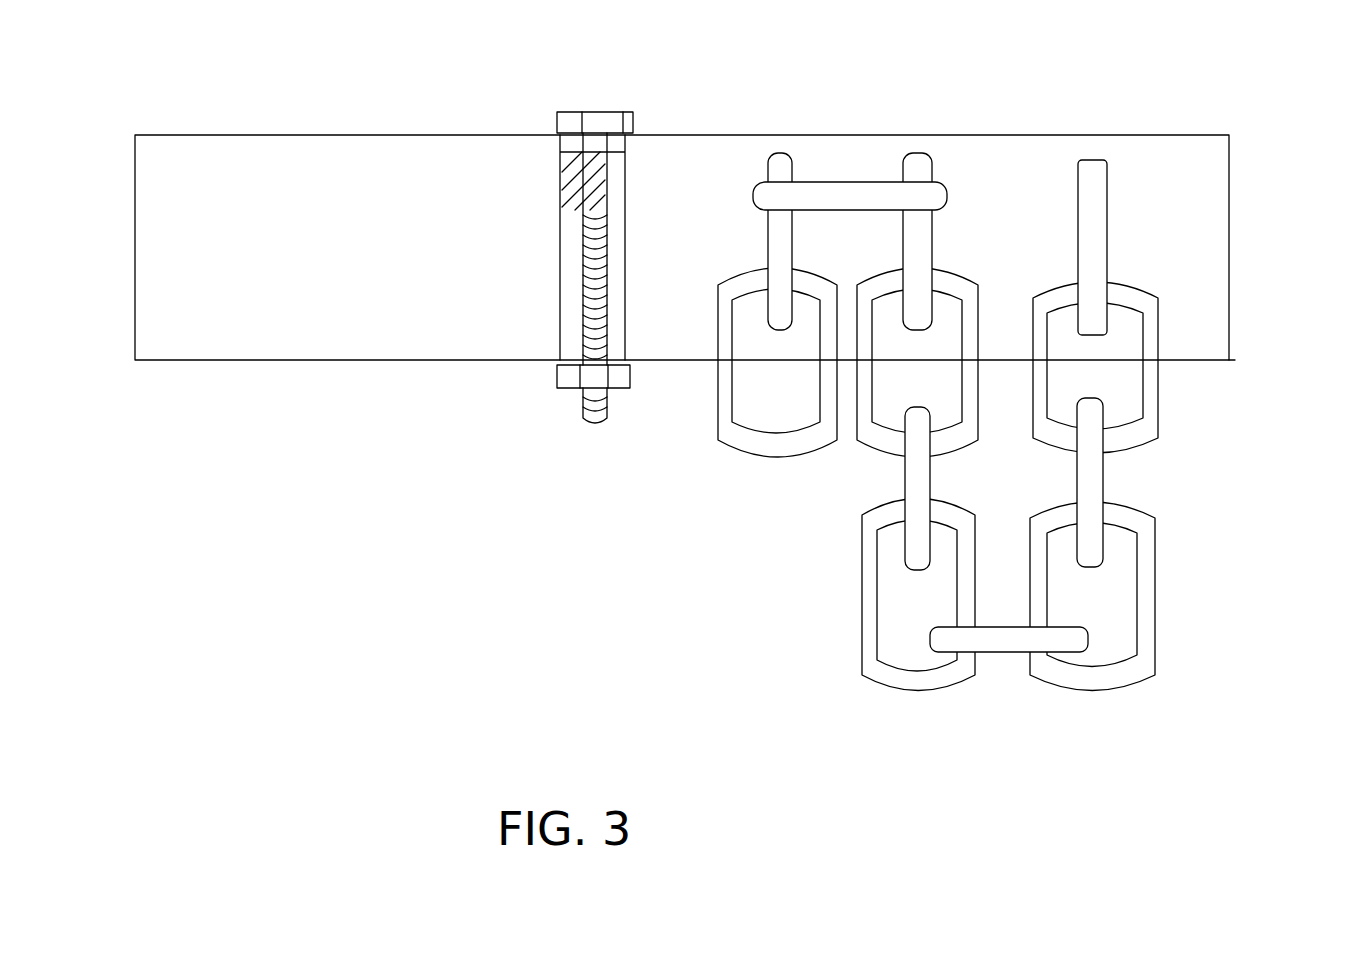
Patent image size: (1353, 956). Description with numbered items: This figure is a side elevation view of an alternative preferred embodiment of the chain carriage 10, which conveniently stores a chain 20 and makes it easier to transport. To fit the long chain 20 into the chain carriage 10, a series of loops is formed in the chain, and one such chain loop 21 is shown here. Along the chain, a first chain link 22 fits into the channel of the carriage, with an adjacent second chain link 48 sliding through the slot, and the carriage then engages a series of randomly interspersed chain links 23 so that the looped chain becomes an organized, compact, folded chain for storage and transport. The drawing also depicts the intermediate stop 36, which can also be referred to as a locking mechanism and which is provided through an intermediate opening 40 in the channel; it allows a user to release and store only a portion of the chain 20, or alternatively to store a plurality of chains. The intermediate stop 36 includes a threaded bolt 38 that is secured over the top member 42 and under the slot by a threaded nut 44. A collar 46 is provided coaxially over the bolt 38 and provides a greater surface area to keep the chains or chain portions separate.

The chain carriage 10 is at (1220, 357).
The chain 20 is at (1021, 458).
The chain loop 21 is at (1162, 715).
The first chain link 22 is at (1107, 218).
The chain links 23 is at (797, 238).
The intermediate stop 36 is at (567, 321).
The threaded bolt 38 is at (608, 275).
The intermediate opening 40 is at (608, 135).
The top member 42 is at (308, 130).
The threaded nut 44 is at (558, 388).
The collar 46 is at (560, 210).
The second chain link 48 is at (1158, 392).